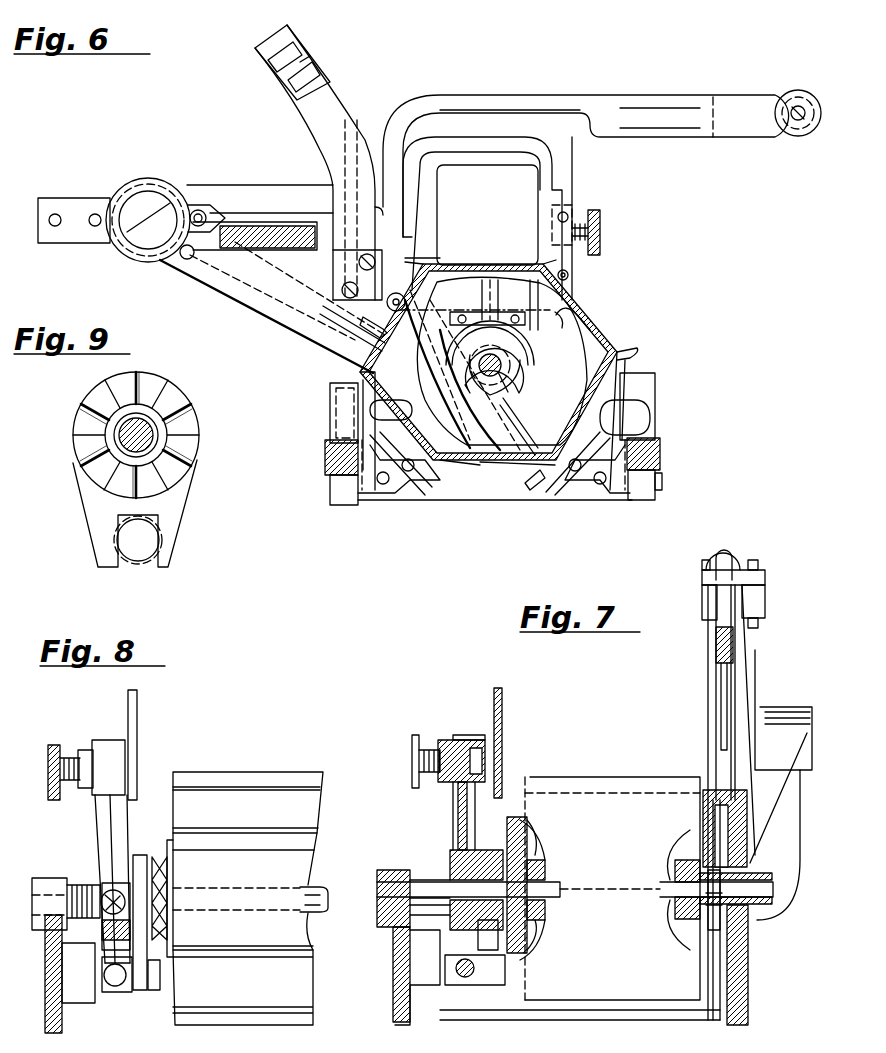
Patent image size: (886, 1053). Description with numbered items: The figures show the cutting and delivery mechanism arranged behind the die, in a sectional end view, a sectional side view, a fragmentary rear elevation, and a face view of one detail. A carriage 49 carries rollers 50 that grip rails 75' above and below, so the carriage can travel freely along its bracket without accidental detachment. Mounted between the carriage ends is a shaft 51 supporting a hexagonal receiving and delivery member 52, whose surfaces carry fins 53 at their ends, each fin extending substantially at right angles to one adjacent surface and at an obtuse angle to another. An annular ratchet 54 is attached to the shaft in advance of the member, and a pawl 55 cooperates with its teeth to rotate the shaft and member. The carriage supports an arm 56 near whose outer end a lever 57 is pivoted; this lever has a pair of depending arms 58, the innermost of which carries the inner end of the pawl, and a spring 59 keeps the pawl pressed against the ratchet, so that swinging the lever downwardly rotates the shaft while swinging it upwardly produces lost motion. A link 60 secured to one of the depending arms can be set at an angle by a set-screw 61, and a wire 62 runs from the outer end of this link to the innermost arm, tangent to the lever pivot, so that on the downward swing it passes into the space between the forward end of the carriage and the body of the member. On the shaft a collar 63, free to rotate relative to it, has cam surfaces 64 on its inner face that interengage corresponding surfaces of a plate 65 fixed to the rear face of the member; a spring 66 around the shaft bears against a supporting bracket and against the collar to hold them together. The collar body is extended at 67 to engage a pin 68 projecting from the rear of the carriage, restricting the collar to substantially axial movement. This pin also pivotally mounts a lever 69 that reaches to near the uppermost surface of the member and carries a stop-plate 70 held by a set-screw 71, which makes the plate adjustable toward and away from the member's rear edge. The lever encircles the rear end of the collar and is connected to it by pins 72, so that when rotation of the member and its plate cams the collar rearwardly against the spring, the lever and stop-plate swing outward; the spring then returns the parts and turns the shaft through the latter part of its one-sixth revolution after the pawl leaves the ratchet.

In FIG. 6, the carriage 49 is at (360, 374).
In FIG. 6, the rollers 50 is at (340, 408).
In FIG. 6, the shaft 51 is at (508, 392).
In FIG. 9, the shaft 51 is at (150, 435).
In FIG. 8, the shaft 51 is at (320, 915).
In FIG. 7, the shaft 51 is at (540, 890).
In FIG. 6, the receiving and delivery member 52 is at (565, 325).
In FIG. 8, the receiving and delivery member 52 is at (250, 810).
In FIG. 7, the receiving and delivery member 52 is at (605, 888).
In FIG. 6, the fins 53 is at (536, 258).
In FIG. 8, the fins 53 is at (205, 775).
In FIG. 7, the fins 53 is at (637, 775).
In FIG. 6, the annular ratchet 54 is at (520, 385).
In FIG. 7, the annular ratchet 54 is at (740, 925).
In FIG. 6, the pawl 55 is at (395, 312).
In FIG. 7, the pawl 55 is at (705, 822).
In FIG. 6, the arm 56 is at (245, 282).
In FIG. 6, the lever 57 is at (525, 107).
In FIG. 7, the lever 57 is at (735, 642).
In FIG. 6, the depending arms 58 is at (410, 200).
In FIG. 6, the spring 59 is at (332, 333).
In FIG. 6, the link 60 is at (570, 290).
In FIG. 6, the set-screw 61 is at (598, 228).
In FIG. 6, the wire 62 is at (578, 325).
In FIG. 7, the collar 63 is at (450, 852).
In FIG. 9, the cam surfaces 64 is at (185, 478).
In FIG. 8, the cam surfaces 64 is at (140, 862).
In FIG. 7, the plate 65 is at (510, 855).
In FIG. 8, the spring 66 is at (75, 880).
In FIG. 7, the spring 66 is at (420, 875).
In FIG. 9, the extension of collar body 67 is at (170, 530).
In FIG. 8, the extension of collar body 67 is at (143, 985).
In FIG. 7, the extension of collar body 67 is at (498, 940).
In FIG. 9, the pin 68 is at (140, 553).
In FIG. 8, the pin 68 is at (152, 978).
In FIG. 7, the pin 68 is at (480, 985).
In FIG. 8, the lever 69 is at (112, 830).
In FIG. 7, the lever 69 is at (455, 810).
In FIG. 8, the stop-plate 70 is at (140, 725).
In FIG. 7, the stop-plate 70 is at (490, 702).
In FIG. 8, the set-screw 71 is at (70, 745).
In FIG. 7, the set-screw 71 is at (432, 750).
In FIG. 8, the pins 72 is at (112, 893).
In FIG. 6, the rails 75' is at (493, 471).